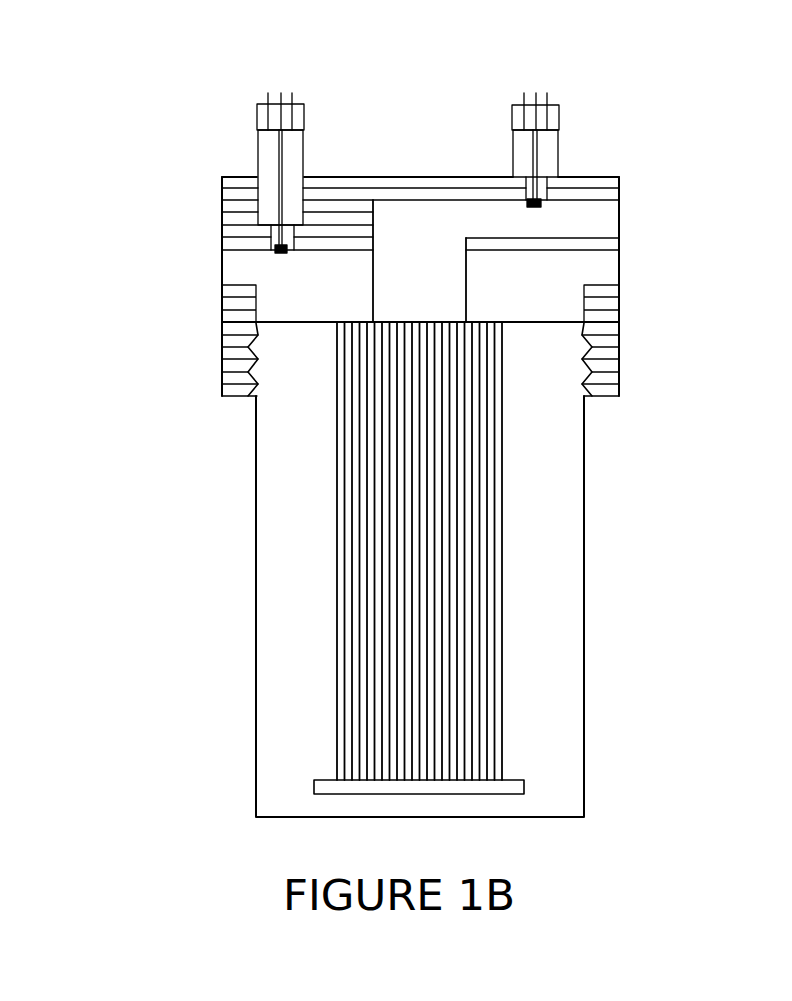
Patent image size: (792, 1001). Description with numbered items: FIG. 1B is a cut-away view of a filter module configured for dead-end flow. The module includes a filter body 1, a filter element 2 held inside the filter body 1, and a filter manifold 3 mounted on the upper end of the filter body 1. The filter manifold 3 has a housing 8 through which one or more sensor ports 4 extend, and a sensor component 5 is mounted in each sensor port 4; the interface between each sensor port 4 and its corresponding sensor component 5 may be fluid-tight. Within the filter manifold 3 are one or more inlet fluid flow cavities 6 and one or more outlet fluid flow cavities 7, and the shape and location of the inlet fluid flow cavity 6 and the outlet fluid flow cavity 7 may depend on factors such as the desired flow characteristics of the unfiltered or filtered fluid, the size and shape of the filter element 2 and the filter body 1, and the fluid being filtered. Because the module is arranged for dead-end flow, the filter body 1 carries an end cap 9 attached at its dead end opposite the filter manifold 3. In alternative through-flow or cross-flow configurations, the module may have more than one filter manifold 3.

The filter body 1 is at (257, 480).
The filter element 2 is at (408, 590).
The filter manifold 3 is at (617, 322).
The sensor port 4 is at (255, 198).
The sensor components 5 is at (268, 152).
The inlet fluid flow cavity 6 is at (278, 287).
The outlet fluid flow cavity 7 is at (397, 227).
The housing 8 is at (620, 190).
The end cap 9 is at (523, 793).